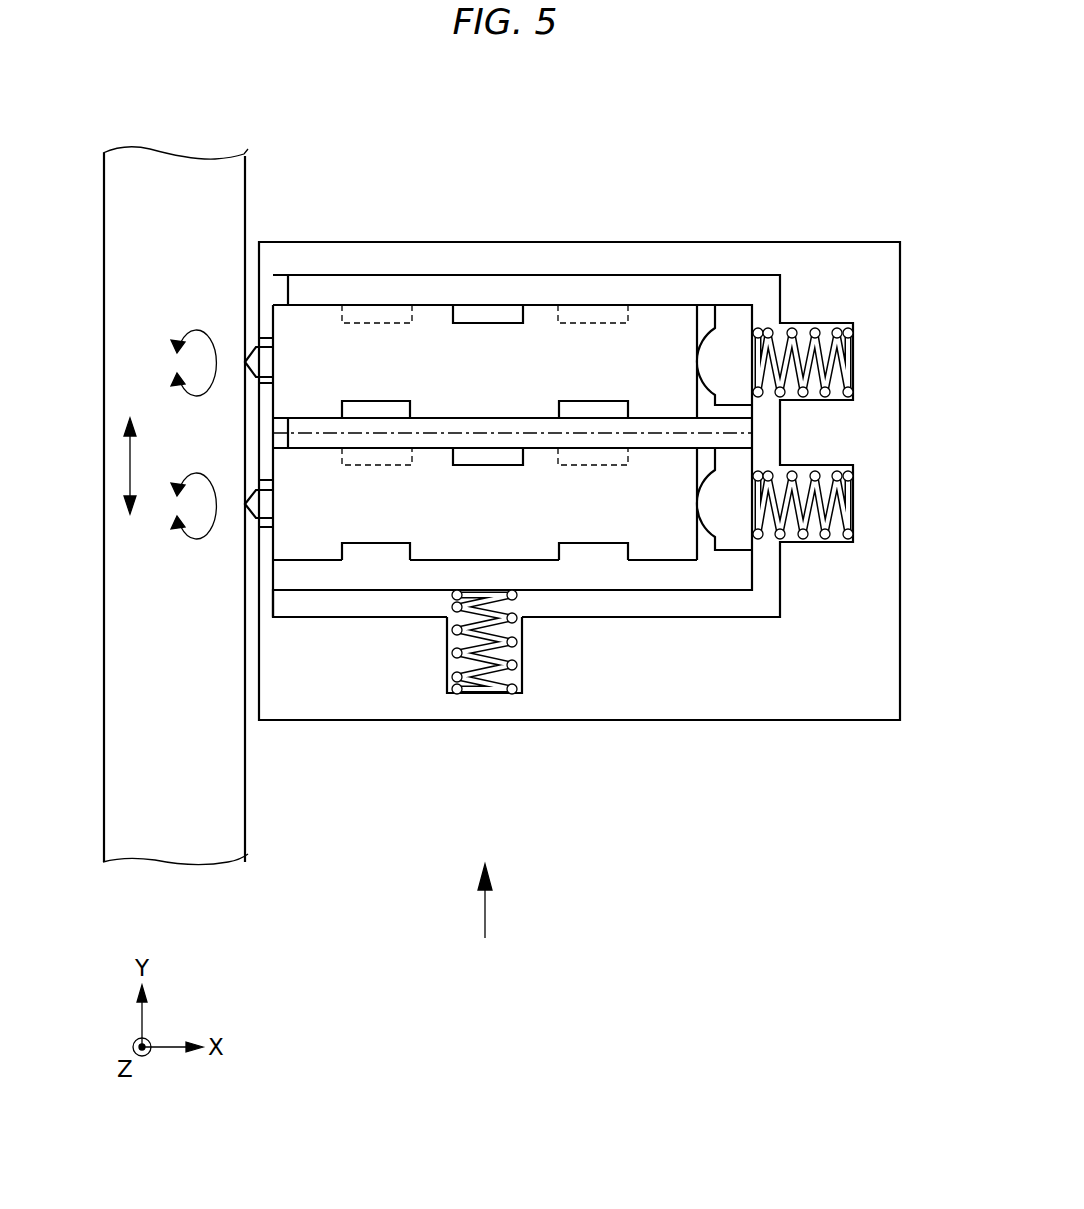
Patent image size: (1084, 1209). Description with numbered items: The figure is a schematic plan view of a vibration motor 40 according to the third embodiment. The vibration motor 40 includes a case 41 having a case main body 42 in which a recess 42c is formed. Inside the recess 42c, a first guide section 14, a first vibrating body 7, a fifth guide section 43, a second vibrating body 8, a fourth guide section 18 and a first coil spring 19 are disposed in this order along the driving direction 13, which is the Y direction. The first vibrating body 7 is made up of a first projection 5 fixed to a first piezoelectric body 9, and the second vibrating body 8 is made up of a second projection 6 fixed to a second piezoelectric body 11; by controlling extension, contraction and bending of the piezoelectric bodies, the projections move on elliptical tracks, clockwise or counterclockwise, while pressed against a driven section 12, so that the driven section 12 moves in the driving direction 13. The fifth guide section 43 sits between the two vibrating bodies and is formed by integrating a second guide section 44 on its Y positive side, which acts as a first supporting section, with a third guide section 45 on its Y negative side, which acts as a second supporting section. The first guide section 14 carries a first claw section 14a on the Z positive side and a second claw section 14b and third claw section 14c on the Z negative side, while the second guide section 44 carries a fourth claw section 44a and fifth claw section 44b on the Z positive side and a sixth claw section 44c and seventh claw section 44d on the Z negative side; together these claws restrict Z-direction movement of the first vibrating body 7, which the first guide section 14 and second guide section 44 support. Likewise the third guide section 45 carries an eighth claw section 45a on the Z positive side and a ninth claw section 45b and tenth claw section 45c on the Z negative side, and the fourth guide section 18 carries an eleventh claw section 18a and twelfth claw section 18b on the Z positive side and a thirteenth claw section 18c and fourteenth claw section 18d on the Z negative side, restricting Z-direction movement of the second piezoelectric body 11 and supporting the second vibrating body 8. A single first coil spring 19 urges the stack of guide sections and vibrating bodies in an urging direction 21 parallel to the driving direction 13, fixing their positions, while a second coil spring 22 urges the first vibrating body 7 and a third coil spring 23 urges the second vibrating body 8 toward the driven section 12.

The first projection 5 is at (258, 355).
The second projection 6 is at (262, 510).
The first vibrating body 7 is at (323, 158).
The second vibrating body 8 is at (328, 814).
The first piezoelectric body 9 is at (512, 286).
The second piezoelectric body 11 is at (512, 633).
The driven section 12 is at (118, 190).
The driving direction 13 is at (128, 464).
The first guide section 14 is at (563, 487).
The first claw section 14a is at (494, 313).
The second claw section 14b is at (378, 313).
The third claw section 14c is at (595, 313).
The fourth guide section 18 is at (670, 578).
The eleventh claw section 18a is at (389, 669).
The twelfth claw section 18b is at (589, 669).
The thirteenth claw section 18c is at (380, 562).
The fourteenth claw section 18d is at (590, 565).
The first coil spring 19 is at (495, 645).
The urging direction 21 is at (487, 905).
The second coil spring 22 is at (808, 386).
The third coil spring 23 is at (808, 485).
The vibration motor 40 is at (861, 129).
The case 41 is at (848, 705).
The case main body 42 is at (581, 519).
The recess 42c is at (748, 590).
The fifth guide section 43 is at (512, 387).
The second guide section 44 is at (465, 424).
The third guide section 45 is at (447, 377).
The fourth claw section 44a is at (383, 381).
The fifth claw section 44b is at (613, 381).
The sixth claw section 44c is at (355, 410).
The seventh claw section 44d is at (597, 410).
The eighth claw section 45a is at (488, 462).
The ninth claw section 45b is at (377, 457).
The tenth claw section 45c is at (597, 458).